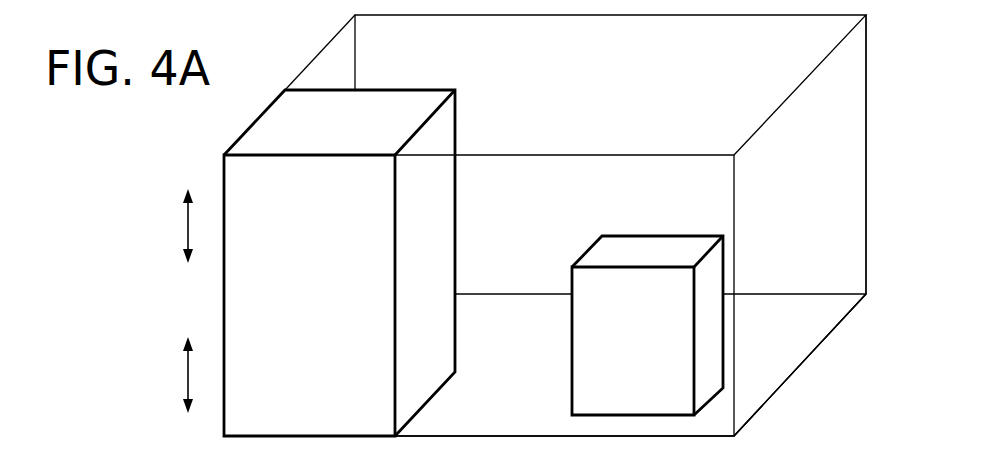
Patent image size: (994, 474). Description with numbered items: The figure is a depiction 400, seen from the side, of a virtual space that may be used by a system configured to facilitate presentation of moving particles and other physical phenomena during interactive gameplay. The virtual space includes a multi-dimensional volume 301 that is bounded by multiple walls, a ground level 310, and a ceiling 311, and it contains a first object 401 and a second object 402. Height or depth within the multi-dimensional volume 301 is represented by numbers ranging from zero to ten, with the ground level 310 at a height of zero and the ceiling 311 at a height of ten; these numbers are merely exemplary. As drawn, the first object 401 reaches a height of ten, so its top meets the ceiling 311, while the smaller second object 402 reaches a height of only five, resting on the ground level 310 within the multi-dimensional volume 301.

The ceiling 311 is at (378, 39).
The multi-dimensional volume 301 is at (822, 315).
The ground level 310 is at (760, 375).
The first object 401 is at (432, 190).
The second object 402 is at (612, 338).
The depiction 400 is at (138, 382).